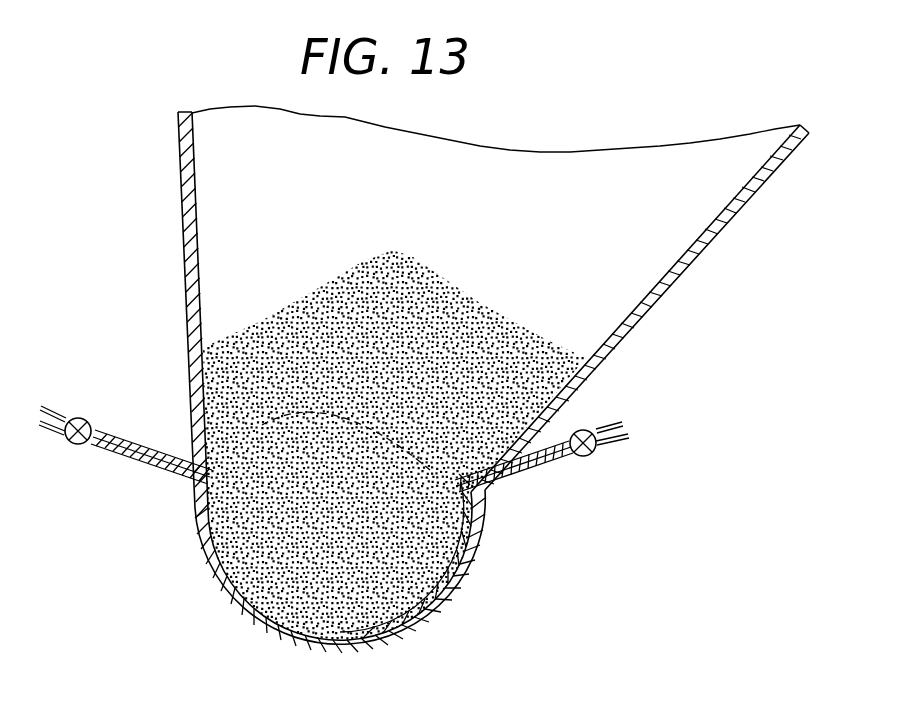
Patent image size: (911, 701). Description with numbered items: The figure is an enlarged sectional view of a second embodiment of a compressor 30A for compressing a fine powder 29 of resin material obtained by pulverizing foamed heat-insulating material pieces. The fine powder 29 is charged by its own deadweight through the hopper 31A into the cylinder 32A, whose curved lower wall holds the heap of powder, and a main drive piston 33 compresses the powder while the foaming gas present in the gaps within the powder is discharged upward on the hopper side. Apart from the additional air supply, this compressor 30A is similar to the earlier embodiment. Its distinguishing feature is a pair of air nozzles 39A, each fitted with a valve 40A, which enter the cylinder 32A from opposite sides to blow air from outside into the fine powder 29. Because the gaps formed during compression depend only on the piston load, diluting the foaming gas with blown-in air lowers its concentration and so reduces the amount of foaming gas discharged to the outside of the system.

The compressor 30A is at (650, 124).
The hopper 31A is at (680, 260).
The cylinder 32A is at (222, 593).
The fine powder 29 is at (368, 362).
The main drive piston 33 is at (262, 418).
The air nozzle 39A is at (128, 458).
The valve 40A is at (78, 418).